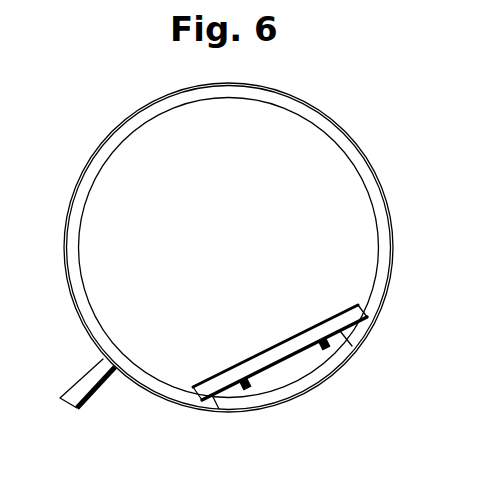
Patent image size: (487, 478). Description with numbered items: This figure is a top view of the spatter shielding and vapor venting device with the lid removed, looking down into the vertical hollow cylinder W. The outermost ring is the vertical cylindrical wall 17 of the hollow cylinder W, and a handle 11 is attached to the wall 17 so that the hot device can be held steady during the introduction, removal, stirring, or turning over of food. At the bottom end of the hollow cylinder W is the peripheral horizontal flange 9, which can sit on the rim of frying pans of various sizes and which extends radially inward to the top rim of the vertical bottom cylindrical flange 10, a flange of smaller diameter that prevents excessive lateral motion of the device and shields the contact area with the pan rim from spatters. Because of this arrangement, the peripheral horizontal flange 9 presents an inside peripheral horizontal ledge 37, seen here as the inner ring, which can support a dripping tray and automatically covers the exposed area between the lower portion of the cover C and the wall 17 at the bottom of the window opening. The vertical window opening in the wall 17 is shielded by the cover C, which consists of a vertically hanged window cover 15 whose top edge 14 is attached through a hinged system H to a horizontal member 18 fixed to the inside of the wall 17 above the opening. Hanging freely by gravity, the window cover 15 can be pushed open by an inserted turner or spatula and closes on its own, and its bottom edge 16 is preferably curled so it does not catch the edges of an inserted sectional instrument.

The vertical cylindrical wall 17 is at (382, 190).
The inside peripheral horizontal ledge 37 is at (324, 128).
The vertical hollow cylinder W is at (70, 196).
The cover C is at (369, 299).
The window cover 15 is at (348, 318).
The hinged system H is at (333, 348).
The bottom edge 16 is at (195, 393).
The top edge 14 is at (262, 377).
The horizontal member 18 is at (300, 372).
The handle 11 is at (80, 383).
The peripheral horizontal flange 9 is at (0, 73).
The vertical bottom cylindrical flange 10 is at (0, 88).